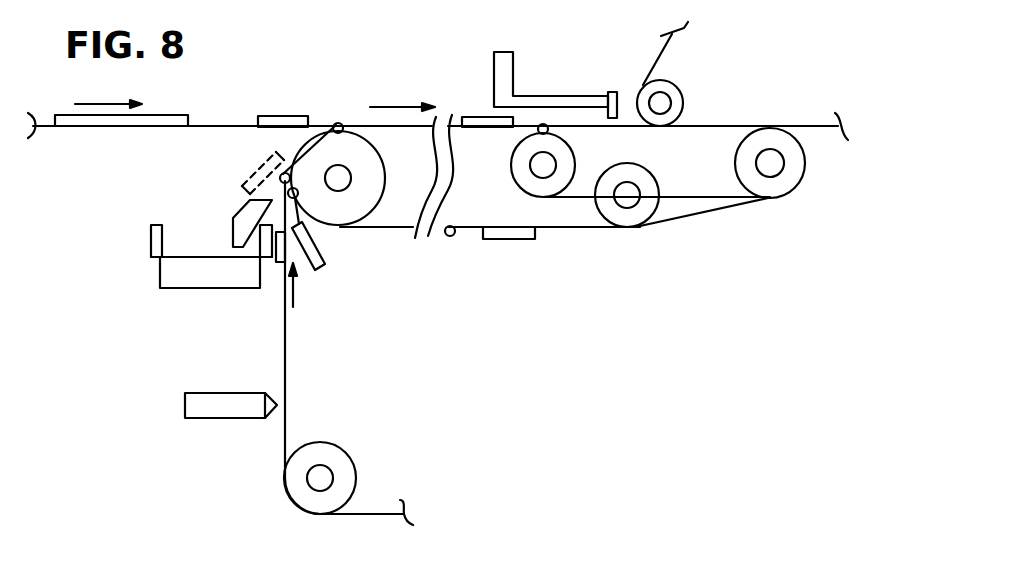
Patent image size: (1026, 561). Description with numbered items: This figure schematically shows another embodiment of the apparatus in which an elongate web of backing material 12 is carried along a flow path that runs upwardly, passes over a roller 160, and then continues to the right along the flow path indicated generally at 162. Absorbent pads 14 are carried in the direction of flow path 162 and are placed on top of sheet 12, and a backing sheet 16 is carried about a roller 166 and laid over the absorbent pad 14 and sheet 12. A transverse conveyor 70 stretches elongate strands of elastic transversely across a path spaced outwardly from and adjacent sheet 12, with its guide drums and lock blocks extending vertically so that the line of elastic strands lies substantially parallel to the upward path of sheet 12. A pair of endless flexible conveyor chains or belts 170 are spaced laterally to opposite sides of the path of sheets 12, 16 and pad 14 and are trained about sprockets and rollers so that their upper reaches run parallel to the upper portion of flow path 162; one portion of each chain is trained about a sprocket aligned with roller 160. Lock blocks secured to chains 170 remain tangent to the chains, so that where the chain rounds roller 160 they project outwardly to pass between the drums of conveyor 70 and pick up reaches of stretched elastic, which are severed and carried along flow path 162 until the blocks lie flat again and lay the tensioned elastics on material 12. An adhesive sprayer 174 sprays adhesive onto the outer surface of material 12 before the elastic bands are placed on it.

The web of backing material 12 is at (286, 342).
The absorbent pad 14 is at (163, 114).
The backing sheet 16 is at (661, 54).
The transverse conveyor 70 is at (182, 301).
The roller 160 is at (348, 213).
The flow path 162 is at (390, 103).
The roller 166 is at (685, 102).
The conveyor chain 170 is at (558, 230).
The adhesive sprayer 174 is at (225, 412).